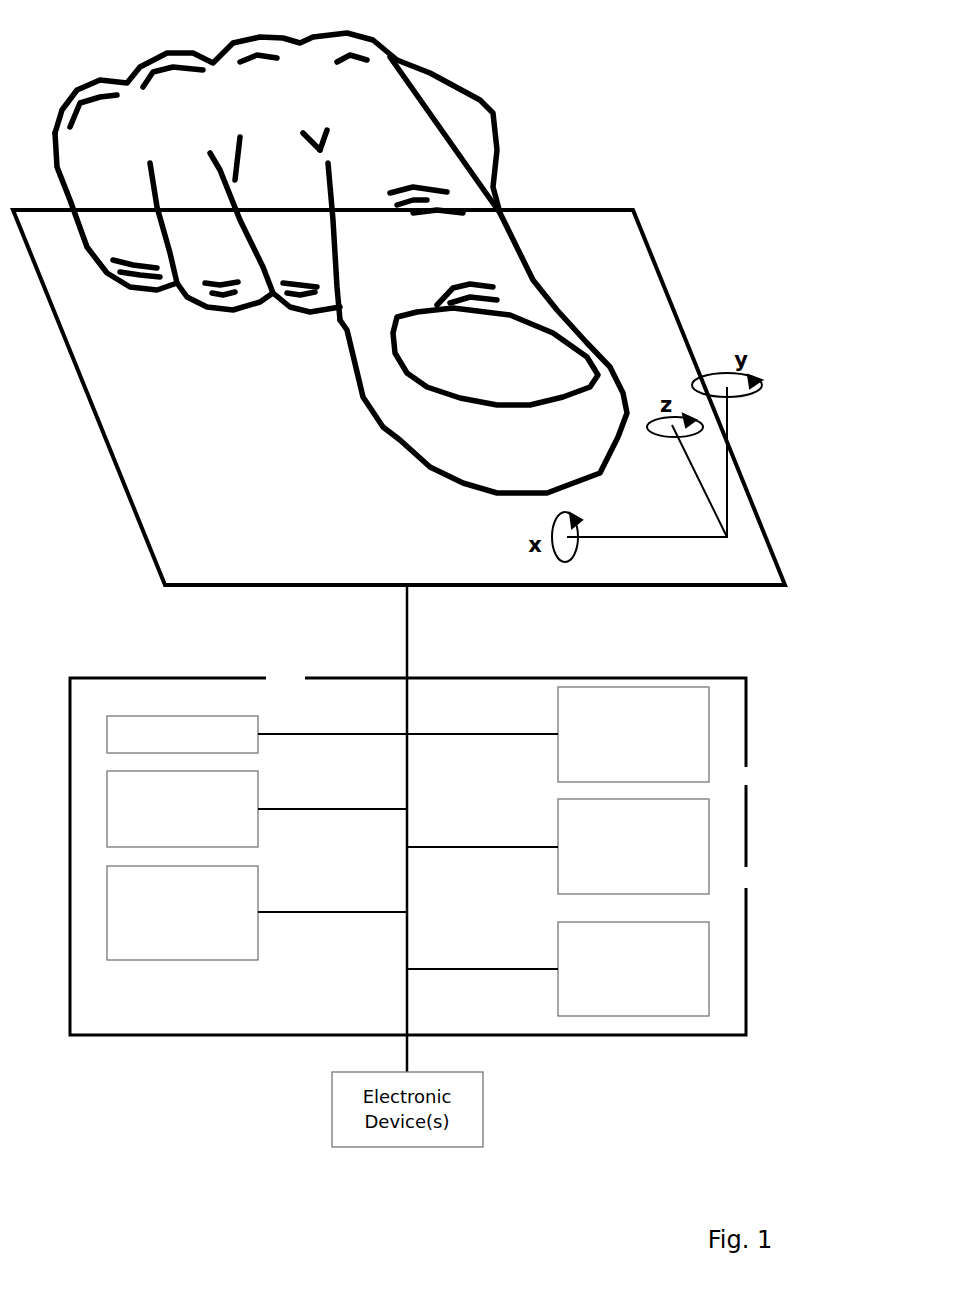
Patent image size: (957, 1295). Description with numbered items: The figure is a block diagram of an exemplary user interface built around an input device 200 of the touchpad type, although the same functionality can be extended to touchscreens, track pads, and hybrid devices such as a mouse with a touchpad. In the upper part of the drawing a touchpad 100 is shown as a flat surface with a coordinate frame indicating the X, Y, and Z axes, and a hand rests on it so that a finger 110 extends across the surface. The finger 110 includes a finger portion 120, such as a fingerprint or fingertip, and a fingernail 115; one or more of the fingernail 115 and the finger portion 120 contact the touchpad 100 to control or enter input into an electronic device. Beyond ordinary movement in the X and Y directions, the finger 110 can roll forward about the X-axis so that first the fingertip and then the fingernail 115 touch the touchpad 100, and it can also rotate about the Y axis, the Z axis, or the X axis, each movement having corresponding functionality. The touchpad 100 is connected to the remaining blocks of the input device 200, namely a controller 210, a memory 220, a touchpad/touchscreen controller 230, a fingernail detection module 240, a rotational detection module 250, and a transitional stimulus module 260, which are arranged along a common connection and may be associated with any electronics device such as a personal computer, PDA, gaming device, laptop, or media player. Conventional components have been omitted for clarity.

The touchpad 100 is at (651, 235).
The finger 110 is at (341, 288).
The fingernail 115 is at (433, 360).
The finger portion 120 is at (487, 493).
The input device 200 is at (737, 688).
The controller 210 is at (258, 733).
The memory 220 is at (258, 808).
The touchpad/touchscreen controller 230 is at (258, 911).
The fingernail detection module 240 is at (709, 734).
The rotational detection module 250 is at (709, 845).
The transitional stimulus module 260 is at (709, 968).